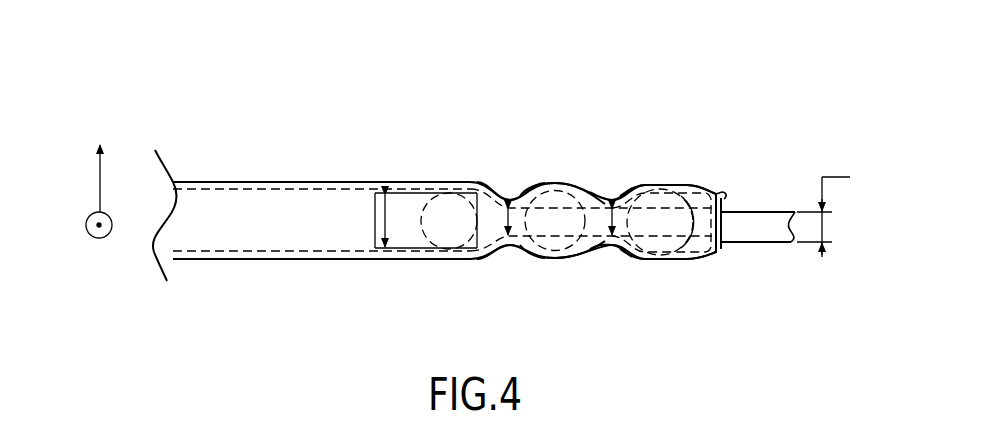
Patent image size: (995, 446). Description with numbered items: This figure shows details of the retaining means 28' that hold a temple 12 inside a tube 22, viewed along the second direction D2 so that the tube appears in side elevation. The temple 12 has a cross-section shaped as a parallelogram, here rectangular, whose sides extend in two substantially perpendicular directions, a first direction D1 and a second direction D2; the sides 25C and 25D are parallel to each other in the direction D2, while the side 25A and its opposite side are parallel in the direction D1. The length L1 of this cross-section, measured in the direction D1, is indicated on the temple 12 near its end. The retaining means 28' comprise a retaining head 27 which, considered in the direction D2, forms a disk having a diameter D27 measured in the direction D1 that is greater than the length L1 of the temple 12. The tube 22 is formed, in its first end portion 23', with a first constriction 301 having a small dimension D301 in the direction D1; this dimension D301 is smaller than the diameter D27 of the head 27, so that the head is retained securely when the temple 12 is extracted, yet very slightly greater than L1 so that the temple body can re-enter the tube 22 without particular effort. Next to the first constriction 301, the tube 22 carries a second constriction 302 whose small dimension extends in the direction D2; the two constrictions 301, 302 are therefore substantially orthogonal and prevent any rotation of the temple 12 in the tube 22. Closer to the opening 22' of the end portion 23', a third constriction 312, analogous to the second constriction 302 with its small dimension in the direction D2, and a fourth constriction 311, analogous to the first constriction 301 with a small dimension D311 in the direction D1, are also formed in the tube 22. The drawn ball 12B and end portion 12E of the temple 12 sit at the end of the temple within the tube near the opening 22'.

The tube 22 is at (315, 207).
The retaining head 27 is at (440, 212).
The diameter of retaining head D27 is at (385, 221).
The first constriction 301 is at (506, 255).
The second constriction 302 is at (550, 250).
The small dimension of first constriction D301 is at (508, 207).
The ball of rod end 12B is at (557, 218).
The fourth constriction 311 is at (612, 257).
The small dimension of fourth constriction D311 is at (612, 208).
The third constriction 312 is at (665, 250).
The opening 22' is at (711, 196).
The temple 12 is at (789, 248).
The side of temple cross-section 25C is at (752, 212).
The rod end portion 12E is at (773, 225).
The side of temple cross-section 25A is at (752, 236).
The side of temple cross-section 25D is at (717, 252).
The length of temple cross-section L1 is at (824, 206).
The retaining means 28' is at (517, 98).
The first end portion of tube 23' is at (593, 278).
The first direction D1 is at (113, 178).
The second direction D2 is at (99, 228).